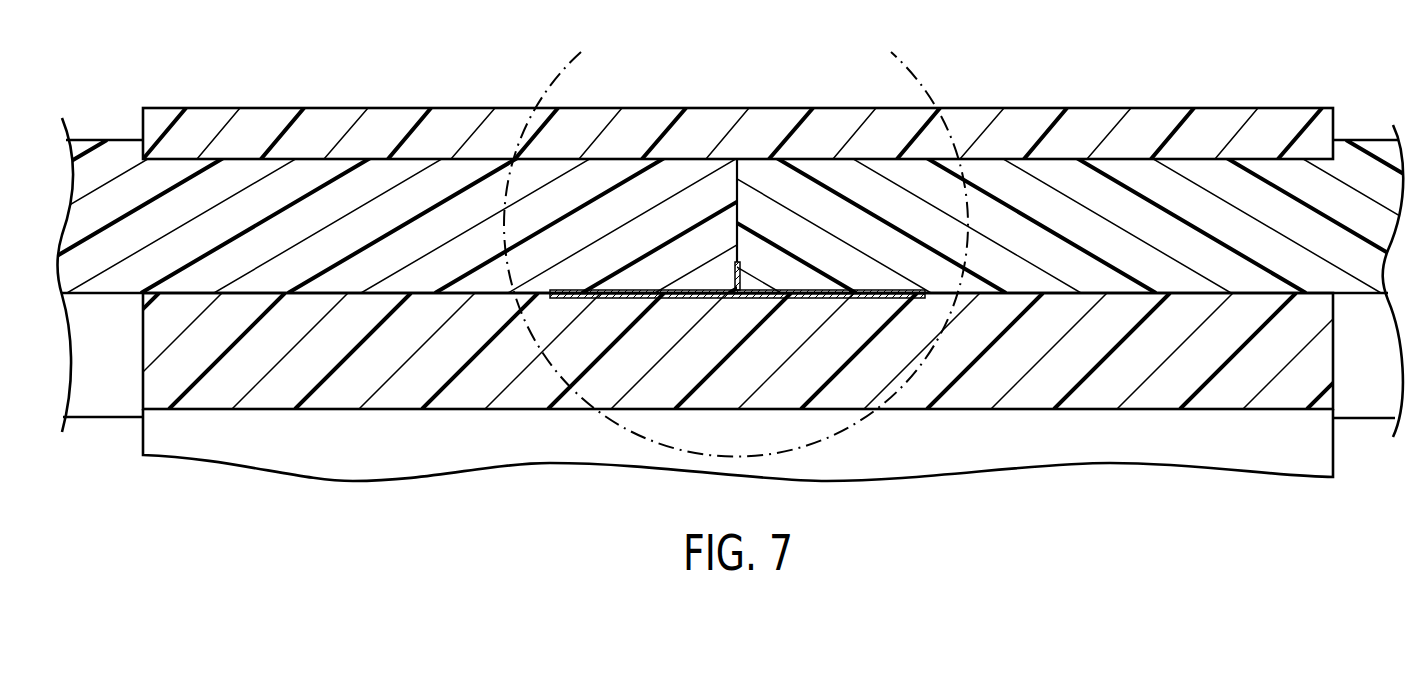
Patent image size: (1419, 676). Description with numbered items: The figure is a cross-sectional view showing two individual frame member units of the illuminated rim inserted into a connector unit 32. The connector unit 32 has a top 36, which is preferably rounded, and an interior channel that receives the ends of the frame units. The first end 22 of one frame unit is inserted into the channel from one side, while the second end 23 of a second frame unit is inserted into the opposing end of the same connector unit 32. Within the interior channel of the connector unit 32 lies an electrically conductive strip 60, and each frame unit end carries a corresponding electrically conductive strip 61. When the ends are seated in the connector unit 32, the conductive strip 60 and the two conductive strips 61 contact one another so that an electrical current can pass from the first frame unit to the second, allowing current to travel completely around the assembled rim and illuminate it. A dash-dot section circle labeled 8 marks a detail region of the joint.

The section view circle (FIG. 8 detail) 8 is at (736, 238).
The first end 22 is at (1358, 170).
The second end 23 is at (118, 147).
The connector unit 32 is at (1290, 115).
The top 36 is at (738, 88).
The electrically conductive strip 60 is at (898, 300).
The electrically conductive strip 61 is at (640, 290).